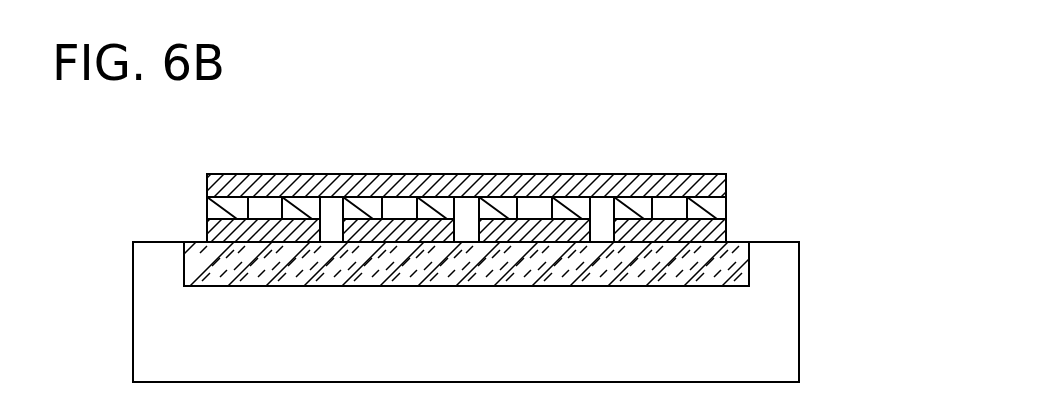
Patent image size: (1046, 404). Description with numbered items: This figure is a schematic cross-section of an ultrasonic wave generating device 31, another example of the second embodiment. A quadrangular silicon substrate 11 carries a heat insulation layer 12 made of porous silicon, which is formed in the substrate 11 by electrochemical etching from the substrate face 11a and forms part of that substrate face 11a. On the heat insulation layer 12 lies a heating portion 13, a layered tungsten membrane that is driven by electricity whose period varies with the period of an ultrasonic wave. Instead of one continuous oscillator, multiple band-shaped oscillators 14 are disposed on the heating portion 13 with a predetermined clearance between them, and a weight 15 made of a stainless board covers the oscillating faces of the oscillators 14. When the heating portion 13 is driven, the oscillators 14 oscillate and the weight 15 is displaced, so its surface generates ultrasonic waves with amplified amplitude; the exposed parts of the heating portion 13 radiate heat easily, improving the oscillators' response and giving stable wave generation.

The substrate 11 is at (775, 253).
The substrate face 11a is at (150, 242).
The heat insulation layer 12 is at (672, 260).
The heating portion 13 is at (397, 215).
The oscillator 14 is at (232, 205).
The weight 15 is at (535, 185).
The ultrasonic wave generating device 31 is at (503, 177).